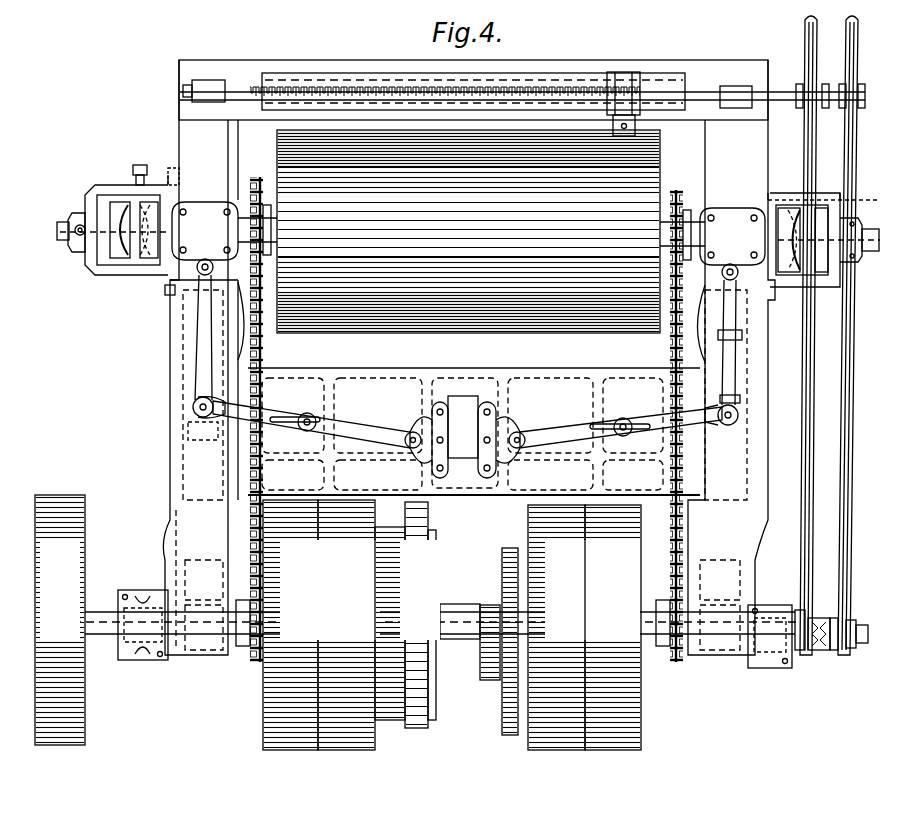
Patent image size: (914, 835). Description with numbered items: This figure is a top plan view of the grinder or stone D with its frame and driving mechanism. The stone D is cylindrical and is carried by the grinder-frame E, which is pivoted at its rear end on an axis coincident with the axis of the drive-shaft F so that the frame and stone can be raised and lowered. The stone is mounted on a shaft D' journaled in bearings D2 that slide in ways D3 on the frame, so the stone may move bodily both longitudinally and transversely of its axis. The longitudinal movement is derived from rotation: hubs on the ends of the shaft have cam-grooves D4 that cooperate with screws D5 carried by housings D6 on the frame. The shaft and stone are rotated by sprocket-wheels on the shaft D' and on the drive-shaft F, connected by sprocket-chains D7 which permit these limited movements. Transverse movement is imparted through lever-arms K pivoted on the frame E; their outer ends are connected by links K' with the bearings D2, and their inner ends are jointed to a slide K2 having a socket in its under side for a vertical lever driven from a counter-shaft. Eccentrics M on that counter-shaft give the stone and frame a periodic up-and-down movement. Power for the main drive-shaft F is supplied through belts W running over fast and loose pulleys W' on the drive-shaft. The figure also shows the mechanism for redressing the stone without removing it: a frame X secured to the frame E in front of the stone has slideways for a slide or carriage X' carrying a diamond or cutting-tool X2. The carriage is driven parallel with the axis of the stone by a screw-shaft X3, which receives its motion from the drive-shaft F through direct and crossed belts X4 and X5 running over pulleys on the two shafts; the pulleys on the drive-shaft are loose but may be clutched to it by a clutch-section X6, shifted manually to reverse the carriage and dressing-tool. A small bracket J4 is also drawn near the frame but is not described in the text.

The frame X is at (522, 75).
The slide or carriage X' is at (634, 77).
The diamond or cutting-tool X2 is at (636, 128).
The screw-shaft X3 is at (540, 88).
The direct belt X4 is at (813, 335).
The crossed belt X5 is at (855, 335).
The clutch-section X6 is at (812, 652).
The grinder or stone D is at (468, 231).
The shaft D' is at (452, 234).
The bearings D2 is at (468, 241).
The ways D3 is at (180, 290).
The cam-grooves D4 is at (118, 205).
The screws D5 is at (136, 166).
The housings D6 is at (158, 185).
The sprocket-chains D7 is at (672, 350).
The grinder-frame E is at (195, 340).
The lever-arms K is at (498, 403).
The links K' is at (175, 405).
The slide K2 is at (460, 430).
The bracket J4 is at (188, 430).
The eccentrics M is at (200, 458).
The drive-shaft F is at (118, 640).
The belts W is at (338, 635).
The fast and loose pulleys W' is at (441, 625).